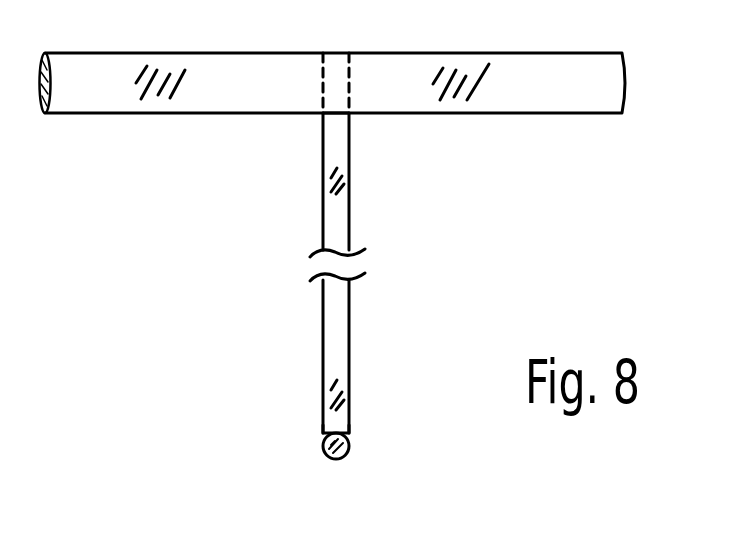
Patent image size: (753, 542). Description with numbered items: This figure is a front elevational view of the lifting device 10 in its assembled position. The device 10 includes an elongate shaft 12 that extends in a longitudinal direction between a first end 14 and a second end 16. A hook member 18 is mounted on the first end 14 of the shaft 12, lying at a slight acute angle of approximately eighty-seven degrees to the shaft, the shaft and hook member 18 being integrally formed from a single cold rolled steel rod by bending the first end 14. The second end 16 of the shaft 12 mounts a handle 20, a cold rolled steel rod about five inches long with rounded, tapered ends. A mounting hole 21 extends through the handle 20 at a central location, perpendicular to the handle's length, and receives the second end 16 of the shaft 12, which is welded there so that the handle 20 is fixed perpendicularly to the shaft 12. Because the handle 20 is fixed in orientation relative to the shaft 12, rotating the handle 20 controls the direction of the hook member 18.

The lifting device 10 is at (217, 202).
The elongate shaft 12 is at (342, 177).
The first end 14 is at (345, 428).
The second end 16 is at (322, 126).
The hook member 18 is at (333, 460).
The handle 20 is at (502, 97).
The mounting hole 21 is at (350, 87).